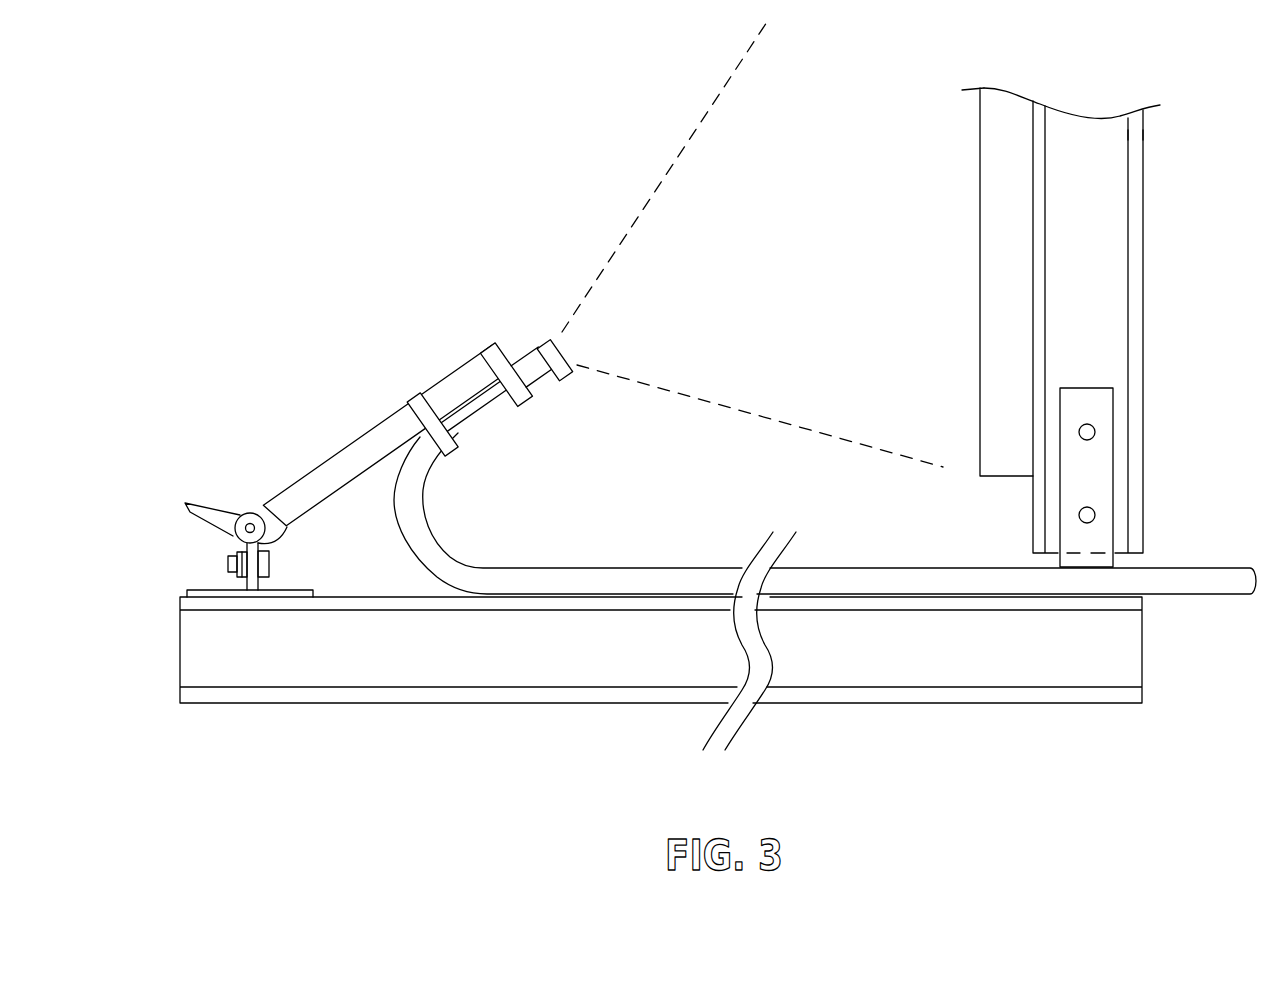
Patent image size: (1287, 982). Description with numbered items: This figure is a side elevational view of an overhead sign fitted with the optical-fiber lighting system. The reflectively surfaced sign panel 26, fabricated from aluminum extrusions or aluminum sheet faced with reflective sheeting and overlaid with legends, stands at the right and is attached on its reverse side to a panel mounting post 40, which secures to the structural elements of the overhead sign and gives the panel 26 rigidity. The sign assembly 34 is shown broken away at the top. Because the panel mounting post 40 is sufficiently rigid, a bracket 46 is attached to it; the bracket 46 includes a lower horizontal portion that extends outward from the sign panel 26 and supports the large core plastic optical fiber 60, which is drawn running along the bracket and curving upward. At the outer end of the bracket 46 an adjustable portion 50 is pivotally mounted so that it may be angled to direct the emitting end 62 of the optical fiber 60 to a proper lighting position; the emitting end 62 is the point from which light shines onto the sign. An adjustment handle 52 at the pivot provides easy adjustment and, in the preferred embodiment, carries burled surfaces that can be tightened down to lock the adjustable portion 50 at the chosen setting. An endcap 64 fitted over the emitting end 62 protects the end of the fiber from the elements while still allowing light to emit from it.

The reflectively surfaced panel 26 is at (1013, 228).
The upright post assembly 34 is at (1150, 170).
The panel mounting post 40 is at (1072, 295).
The bracket 46 is at (403, 648).
The adjustable portion 50 is at (328, 477).
The adjustment handle 52 is at (200, 503).
The large core plastic optical fiber 60 is at (548, 587).
The emitting end 62 is at (563, 360).
The endcap 64 is at (552, 350).